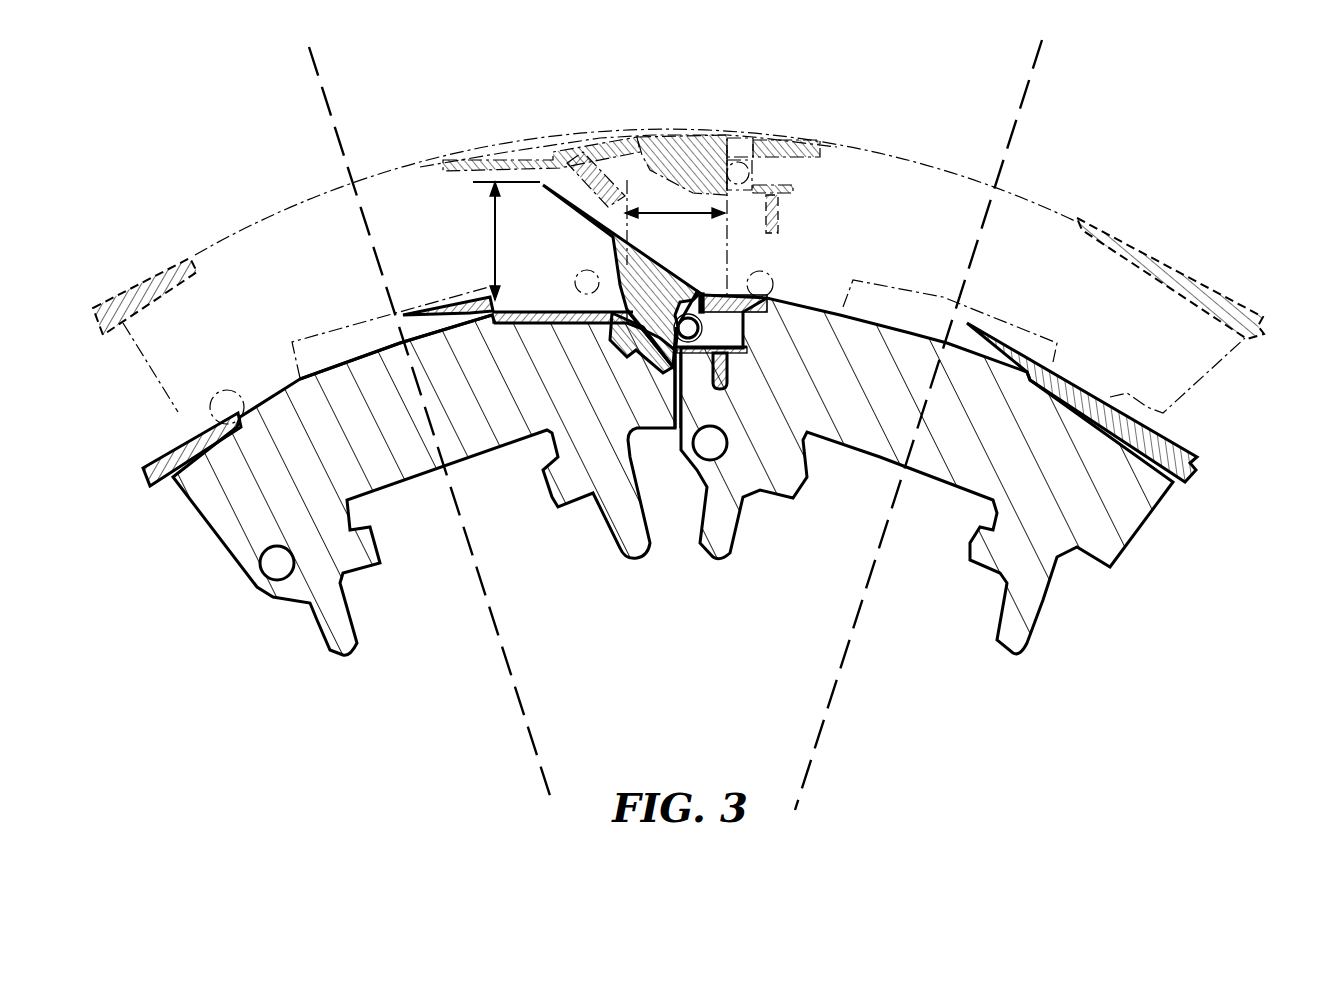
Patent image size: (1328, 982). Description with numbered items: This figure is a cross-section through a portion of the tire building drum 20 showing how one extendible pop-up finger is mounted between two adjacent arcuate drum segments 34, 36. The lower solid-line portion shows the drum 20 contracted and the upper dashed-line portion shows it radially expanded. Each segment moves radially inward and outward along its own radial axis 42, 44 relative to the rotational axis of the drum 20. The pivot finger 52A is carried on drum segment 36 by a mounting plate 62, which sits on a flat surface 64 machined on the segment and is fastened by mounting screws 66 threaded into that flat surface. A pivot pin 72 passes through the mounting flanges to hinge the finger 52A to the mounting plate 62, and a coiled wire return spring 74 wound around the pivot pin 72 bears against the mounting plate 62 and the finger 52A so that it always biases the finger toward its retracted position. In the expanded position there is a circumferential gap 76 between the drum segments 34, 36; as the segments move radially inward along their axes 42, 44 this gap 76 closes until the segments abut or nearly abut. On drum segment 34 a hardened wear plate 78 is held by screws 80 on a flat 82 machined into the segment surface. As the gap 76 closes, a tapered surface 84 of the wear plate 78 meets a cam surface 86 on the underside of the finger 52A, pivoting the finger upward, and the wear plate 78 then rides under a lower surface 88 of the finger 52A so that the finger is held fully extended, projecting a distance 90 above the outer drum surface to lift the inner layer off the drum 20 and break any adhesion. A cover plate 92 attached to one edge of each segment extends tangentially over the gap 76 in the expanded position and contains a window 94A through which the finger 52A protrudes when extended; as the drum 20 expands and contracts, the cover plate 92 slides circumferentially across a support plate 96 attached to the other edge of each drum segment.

The tire building drum 20 is at (918, 152).
The drum segment 34 is at (235, 232).
The drum segment 36 is at (1020, 192).
The radial axis 42 is at (511, 663).
The radial axis 44 is at (840, 664).
The pivot finger 52A is at (594, 226).
The mounting plate 62 is at (727, 355).
The flat surface 64 is at (727, 343).
The mounting screws 66 is at (727, 368).
The pivot pin 72 is at (718, 345).
The coiled wire return spring 74 is at (681, 300).
The circumferential gap 76 is at (684, 215).
The hardened wear plate 78 is at (667, 365).
The screws 80 is at (670, 328).
The flat 82 is at (630, 330).
The tapered surface 84 is at (620, 247).
The cam surface 86 is at (613, 283).
The lower surface 88 is at (675, 348).
The distance 90 is at (493, 216).
The cover plate 92 is at (463, 300).
The window 94A is at (532, 312).
The support plate 96 is at (525, 322).